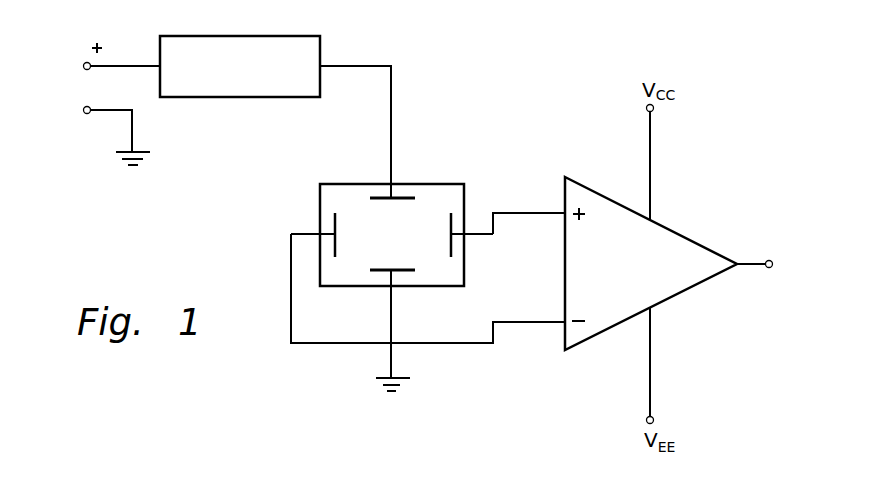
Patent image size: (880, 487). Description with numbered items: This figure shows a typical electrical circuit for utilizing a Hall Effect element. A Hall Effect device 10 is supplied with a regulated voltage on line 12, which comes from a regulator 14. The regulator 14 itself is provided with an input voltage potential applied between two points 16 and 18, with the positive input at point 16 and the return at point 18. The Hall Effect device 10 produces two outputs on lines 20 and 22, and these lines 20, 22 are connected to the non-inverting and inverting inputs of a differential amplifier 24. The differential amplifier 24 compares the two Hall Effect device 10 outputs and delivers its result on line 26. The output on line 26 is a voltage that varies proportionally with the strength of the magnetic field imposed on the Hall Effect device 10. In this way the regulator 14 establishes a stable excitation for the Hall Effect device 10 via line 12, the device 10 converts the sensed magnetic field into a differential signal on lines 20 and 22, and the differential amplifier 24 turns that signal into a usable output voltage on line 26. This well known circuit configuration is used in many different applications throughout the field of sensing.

The Hall Effect device 10 is at (424, 184).
The line 12 is at (391, 97).
The regulator 14 is at (275, 36).
The point 16 is at (85, 62).
The point 18 is at (86, 113).
The line 20 is at (493, 213).
The line 22 is at (453, 344).
The differential amplifier 24 is at (571, 350).
The line 26 is at (752, 265).